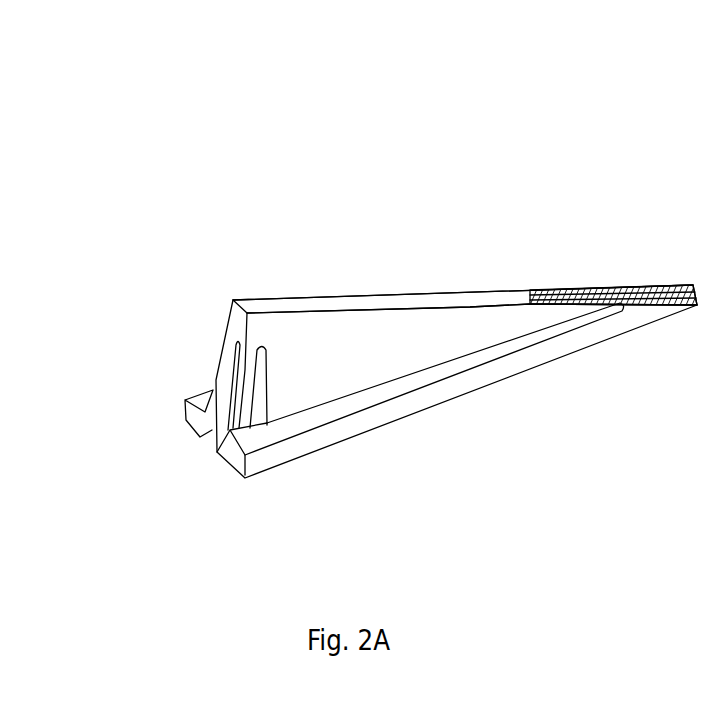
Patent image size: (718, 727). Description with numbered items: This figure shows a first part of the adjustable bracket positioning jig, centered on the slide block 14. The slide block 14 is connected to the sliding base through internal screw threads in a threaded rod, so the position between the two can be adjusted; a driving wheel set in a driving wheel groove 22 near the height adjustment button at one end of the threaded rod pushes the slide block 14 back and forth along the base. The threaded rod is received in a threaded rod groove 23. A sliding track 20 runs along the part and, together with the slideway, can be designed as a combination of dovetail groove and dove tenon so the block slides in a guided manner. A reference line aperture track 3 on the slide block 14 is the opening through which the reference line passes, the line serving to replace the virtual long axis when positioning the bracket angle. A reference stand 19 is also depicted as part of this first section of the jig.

The reference line aperture track 3 is at (583, 288).
The slide block 14 is at (338, 343).
The reference stand 19 is at (453, 297).
The sliding track 20 is at (268, 468).
The driving wheel groove 22 is at (253, 407).
The threaded rod groove 23 is at (212, 398).